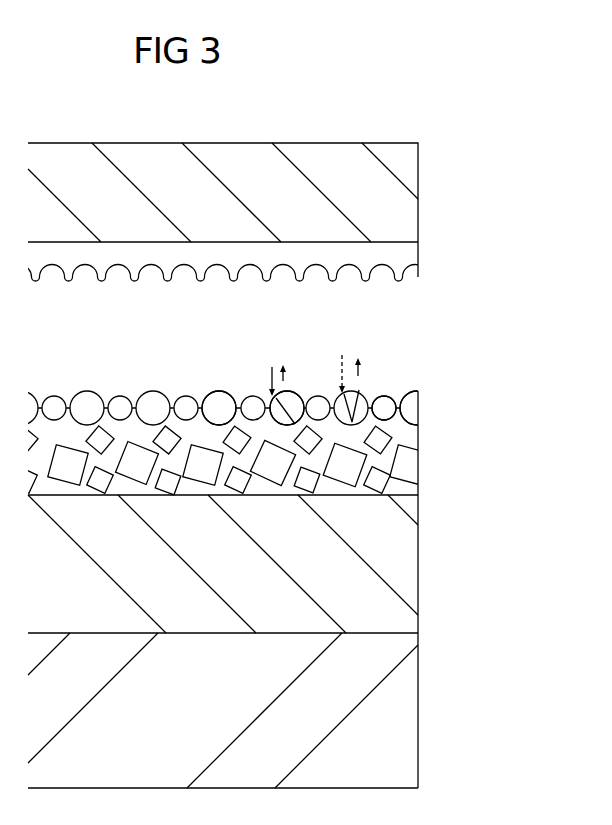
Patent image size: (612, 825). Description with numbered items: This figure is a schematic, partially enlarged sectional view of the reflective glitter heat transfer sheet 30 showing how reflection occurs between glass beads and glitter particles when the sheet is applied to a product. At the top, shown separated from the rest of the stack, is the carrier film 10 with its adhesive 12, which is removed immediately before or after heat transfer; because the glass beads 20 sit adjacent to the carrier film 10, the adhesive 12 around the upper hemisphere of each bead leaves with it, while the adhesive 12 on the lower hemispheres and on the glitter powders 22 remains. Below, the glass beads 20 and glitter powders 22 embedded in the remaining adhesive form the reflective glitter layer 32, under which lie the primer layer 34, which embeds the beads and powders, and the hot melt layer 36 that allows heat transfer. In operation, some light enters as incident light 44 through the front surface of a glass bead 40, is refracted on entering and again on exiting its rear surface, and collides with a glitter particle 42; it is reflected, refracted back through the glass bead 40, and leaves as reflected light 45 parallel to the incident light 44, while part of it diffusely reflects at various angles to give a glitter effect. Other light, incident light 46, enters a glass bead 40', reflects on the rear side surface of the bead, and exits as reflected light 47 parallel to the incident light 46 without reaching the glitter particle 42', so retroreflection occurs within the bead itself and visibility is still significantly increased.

The carrier film 10 is at (418, 200).
The adhesive 12 is at (413, 256).
The glass beads 20 is at (418, 410).
The glitter powders 22 is at (408, 467).
The reflective glitter heat transfer sheet 30 is at (503, 445).
The reflective glitter layer 32 is at (466, 418).
The primer layer 34 is at (410, 560).
The hot melt layer 36 is at (407, 700).
The glass bead 40 is at (261, 387).
The glass bead 40' is at (388, 385).
The glitter particle 42 is at (229, 411).
The glitter particle 42' is at (417, 396).
The incident light 44 is at (266, 377).
The reflected light 45 is at (288, 383).
The incident light 46 is at (340, 383).
The reflected light 47 is at (362, 383).